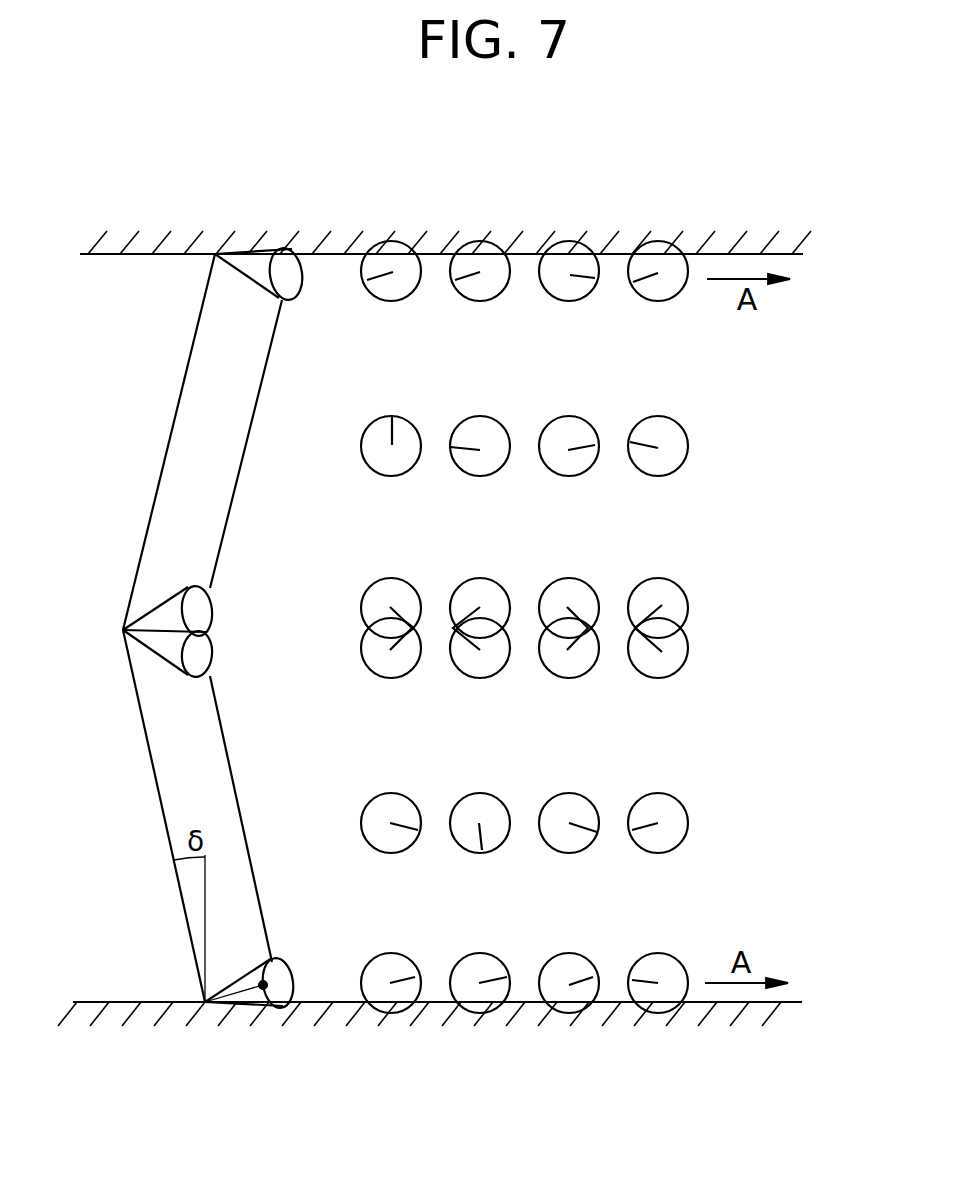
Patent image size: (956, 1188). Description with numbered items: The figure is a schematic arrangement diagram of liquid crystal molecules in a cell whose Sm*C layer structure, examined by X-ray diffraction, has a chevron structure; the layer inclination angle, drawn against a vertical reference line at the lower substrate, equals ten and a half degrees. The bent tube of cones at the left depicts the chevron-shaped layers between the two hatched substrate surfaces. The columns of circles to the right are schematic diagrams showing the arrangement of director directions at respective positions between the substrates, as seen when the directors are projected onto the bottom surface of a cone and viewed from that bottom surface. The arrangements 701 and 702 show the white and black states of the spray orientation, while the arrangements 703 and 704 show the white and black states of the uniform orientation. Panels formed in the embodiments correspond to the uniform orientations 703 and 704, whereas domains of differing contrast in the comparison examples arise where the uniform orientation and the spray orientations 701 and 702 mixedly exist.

The director arrangement of spray orientation (white state) 701 is at (378, 1036).
The director arrangement of spray orientation (black state) 702 is at (473, 1034).
The director arrangement of uniform orientation (white state) 703 is at (553, 1034).
The director arrangement of uniform orientation (black state) 704 is at (647, 1034).